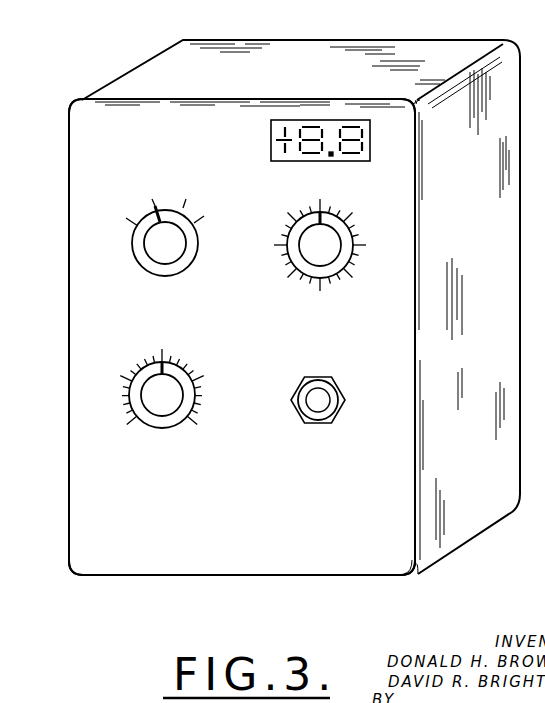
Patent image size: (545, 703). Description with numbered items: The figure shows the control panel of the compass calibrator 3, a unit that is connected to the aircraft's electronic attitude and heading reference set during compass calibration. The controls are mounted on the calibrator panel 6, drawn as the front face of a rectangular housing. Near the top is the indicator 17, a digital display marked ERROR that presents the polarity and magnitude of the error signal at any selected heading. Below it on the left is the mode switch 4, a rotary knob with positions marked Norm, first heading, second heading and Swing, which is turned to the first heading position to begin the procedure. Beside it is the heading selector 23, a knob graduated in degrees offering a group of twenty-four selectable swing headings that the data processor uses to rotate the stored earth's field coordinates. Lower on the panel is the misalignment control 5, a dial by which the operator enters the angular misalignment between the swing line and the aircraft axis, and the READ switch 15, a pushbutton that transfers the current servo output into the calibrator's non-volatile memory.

The calibrator 3 is at (68, 152).
The mode switch 4 is at (193, 266).
The misalignment (MISAL) control 5 is at (162, 428).
The calibrator panel 6 is at (323, 519).
The READ switch 15 is at (337, 390).
The indicator 17 is at (320, 120).
The heading selector 23 is at (383, 222).